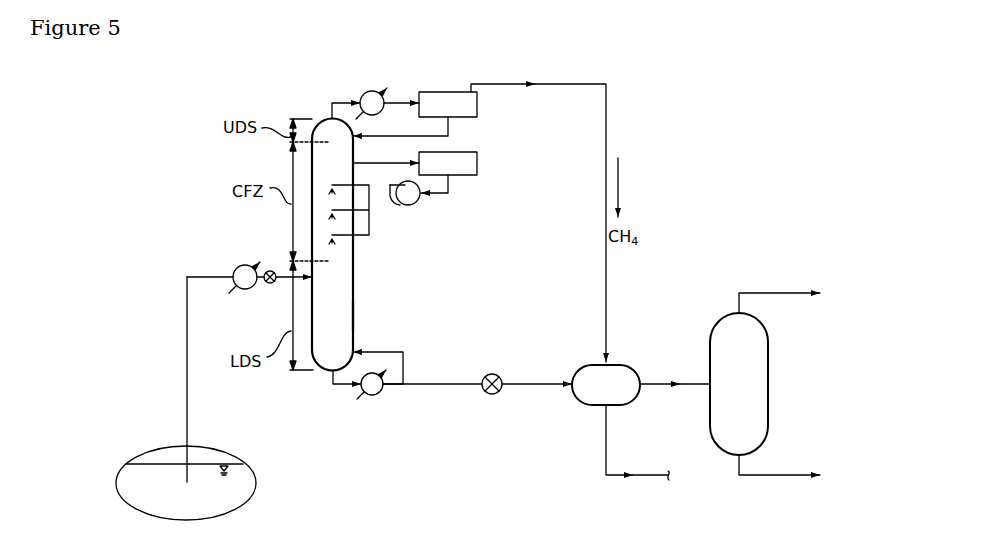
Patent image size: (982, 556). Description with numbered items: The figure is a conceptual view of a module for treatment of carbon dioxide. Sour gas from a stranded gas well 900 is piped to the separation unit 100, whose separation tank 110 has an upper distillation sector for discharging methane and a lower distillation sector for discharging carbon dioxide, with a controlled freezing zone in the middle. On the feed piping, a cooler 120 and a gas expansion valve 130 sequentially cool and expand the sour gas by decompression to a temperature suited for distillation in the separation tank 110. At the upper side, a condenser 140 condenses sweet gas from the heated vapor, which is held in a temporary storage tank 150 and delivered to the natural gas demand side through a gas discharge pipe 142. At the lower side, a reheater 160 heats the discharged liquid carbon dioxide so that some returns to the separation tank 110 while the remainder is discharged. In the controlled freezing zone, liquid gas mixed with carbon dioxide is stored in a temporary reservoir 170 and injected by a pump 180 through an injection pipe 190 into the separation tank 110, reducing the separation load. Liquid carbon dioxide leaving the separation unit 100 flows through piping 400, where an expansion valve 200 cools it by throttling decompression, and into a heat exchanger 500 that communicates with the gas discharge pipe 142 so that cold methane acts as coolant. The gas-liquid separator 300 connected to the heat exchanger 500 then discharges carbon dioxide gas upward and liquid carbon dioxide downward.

The separation unit 100 is at (362, 258).
The separation tank 110 is at (355, 312).
The cooler 120 is at (242, 273).
The gas expansion valve 130 is at (268, 284).
The condenser 140 is at (367, 99).
The gas discharge pipe 142 is at (487, 83).
The temporary storage tank 150 is at (477, 100).
The reheater 160 is at (360, 390).
The temporary reservoir 170 is at (477, 158).
The pump 180 is at (411, 199).
The injection pipe 190 is at (350, 190).
The expansion valve 200 is at (492, 374).
The gas-liquid separator 300 is at (769, 382).
The piping 400 is at (428, 386).
The heat exchanger 500 is at (573, 400).
The stranded gas well 900 is at (248, 498).